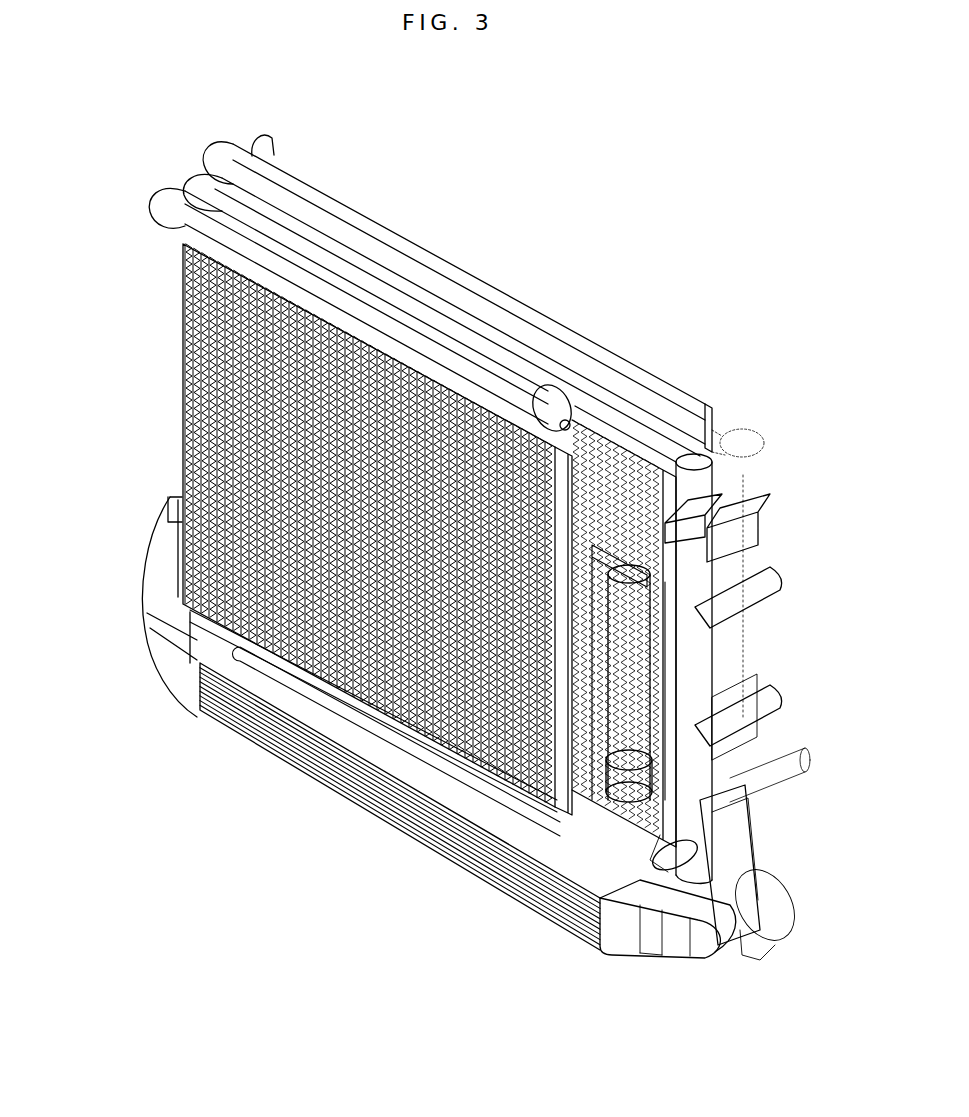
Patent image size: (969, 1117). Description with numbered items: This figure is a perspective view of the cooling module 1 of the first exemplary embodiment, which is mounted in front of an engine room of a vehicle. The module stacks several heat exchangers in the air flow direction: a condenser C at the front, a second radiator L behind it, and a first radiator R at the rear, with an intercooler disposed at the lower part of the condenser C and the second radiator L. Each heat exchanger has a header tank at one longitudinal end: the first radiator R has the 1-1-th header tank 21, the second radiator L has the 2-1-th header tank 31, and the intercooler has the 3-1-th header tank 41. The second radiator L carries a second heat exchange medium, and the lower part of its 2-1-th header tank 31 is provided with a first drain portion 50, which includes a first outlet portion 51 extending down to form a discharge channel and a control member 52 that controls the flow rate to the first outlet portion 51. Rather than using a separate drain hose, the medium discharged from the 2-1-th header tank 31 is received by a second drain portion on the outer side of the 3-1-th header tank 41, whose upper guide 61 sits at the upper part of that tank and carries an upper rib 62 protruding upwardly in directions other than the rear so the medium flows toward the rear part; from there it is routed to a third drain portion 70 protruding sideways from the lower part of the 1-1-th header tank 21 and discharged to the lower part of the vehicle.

The cooling module 1 is at (543, 932).
The 1-1-th header tank 21 is at (740, 490).
The 2-1-th header tank 31 is at (750, 462).
The 3-1-th header tank 41 is at (607, 950).
The first drain portion 50 is at (650, 1037).
The first outlet portion 51 is at (663, 958).
The control member 52 is at (643, 958).
The upper guide 61 is at (718, 952).
The upper rib 62 is at (695, 958).
The third drain portion 70 is at (772, 976).
The first radiator R is at (203, 135).
The second radiator L is at (180, 160).
The condenser C is at (150, 193).